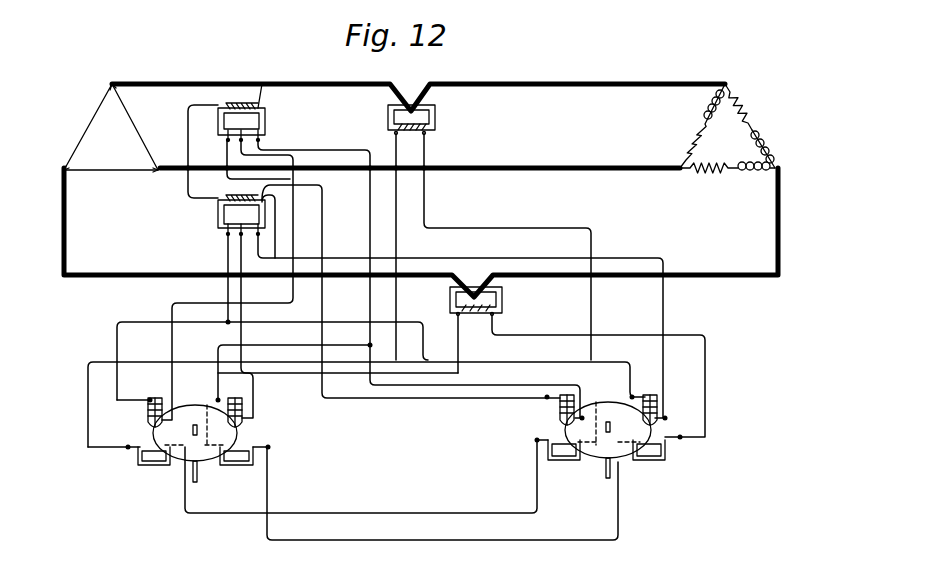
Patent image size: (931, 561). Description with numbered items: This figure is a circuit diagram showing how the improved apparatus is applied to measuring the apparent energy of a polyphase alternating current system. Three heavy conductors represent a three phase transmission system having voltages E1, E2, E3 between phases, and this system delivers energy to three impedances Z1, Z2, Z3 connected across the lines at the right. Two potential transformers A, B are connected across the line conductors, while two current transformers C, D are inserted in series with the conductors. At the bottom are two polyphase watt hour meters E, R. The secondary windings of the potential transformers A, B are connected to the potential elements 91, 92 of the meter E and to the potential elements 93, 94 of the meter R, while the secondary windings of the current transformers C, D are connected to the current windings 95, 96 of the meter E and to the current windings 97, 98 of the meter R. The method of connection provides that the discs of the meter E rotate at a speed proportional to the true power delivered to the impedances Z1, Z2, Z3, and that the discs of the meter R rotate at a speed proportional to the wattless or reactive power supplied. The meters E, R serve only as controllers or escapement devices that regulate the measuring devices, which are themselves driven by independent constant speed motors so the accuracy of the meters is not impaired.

The potential transformer A is at (266, 126).
The potential transformer B is at (210, 219).
The current transformer C is at (388, 103).
The current transformer D is at (504, 296).
The polyphase watt hour meter E is at (551, 431).
The polyphase watt hour meter R is at (141, 431).
The voltage between phases E1 is at (127, 128).
The voltage between phases E2 is at (87, 126).
The voltage between phases E3 is at (110, 171).
The impedance Z1 is at (752, 110).
The impedance Z2 is at (694, 122).
The impedance Z3 is at (730, 176).
The potential element 91 is at (560, 410).
The potential element 92 is at (658, 402).
The potential element 93 is at (165, 386).
The potential element 94 is at (245, 402).
The current winding 95 is at (546, 456).
The current winding 96 is at (668, 452).
The current winding 97 is at (138, 455).
The current winding 98 is at (256, 464).